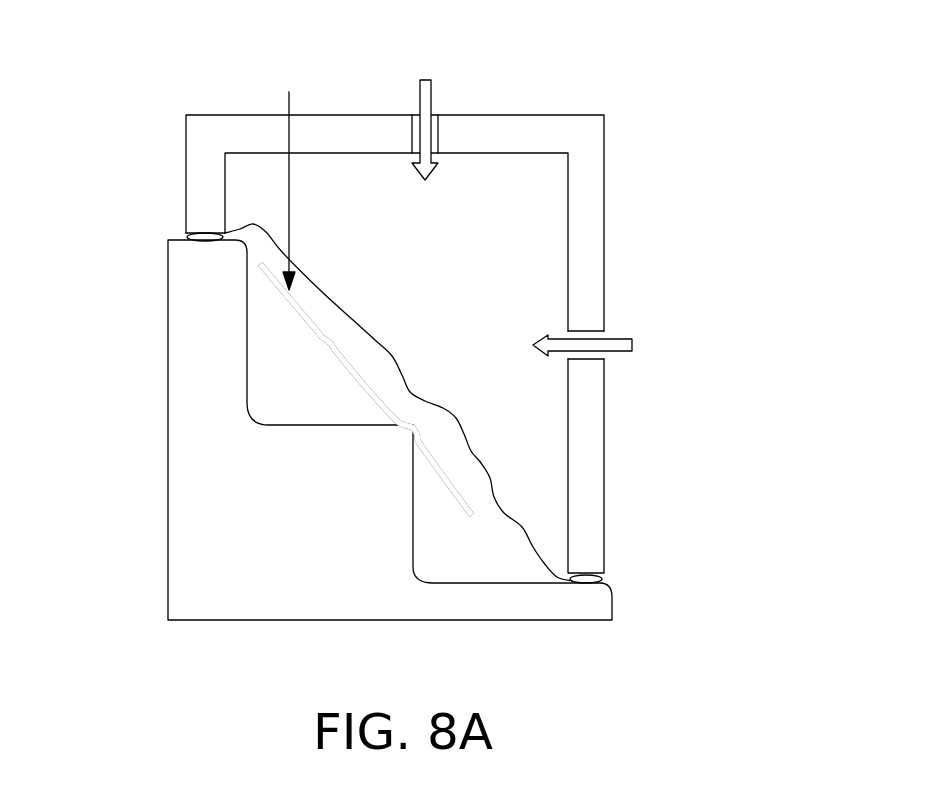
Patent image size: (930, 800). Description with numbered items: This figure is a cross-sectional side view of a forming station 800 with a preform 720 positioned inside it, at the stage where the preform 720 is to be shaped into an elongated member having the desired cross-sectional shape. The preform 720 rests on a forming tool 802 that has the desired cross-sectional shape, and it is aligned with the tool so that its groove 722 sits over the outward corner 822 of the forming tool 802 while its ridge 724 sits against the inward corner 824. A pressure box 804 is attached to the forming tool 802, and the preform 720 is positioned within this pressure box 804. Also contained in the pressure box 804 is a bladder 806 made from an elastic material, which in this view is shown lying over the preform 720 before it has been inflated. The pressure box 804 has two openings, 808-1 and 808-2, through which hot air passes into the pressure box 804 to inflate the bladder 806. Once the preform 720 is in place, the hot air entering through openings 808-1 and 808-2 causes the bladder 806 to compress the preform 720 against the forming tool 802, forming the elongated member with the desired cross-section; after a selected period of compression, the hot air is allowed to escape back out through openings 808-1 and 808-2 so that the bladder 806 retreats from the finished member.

The forming station 800 is at (425, 322).
The forming tool 802 is at (188, 497).
The pressure box 804 is at (515, 114).
The bladder 806 is at (547, 440).
The opening 808-1 is at (412, 137).
The opening 808-2 is at (588, 362).
The preform 720 is at (292, 298).
The groove 722 is at (418, 428).
The ridge 724 is at (317, 340).
The outward corner 822 is at (400, 431).
The inward corner 824 is at (250, 425).